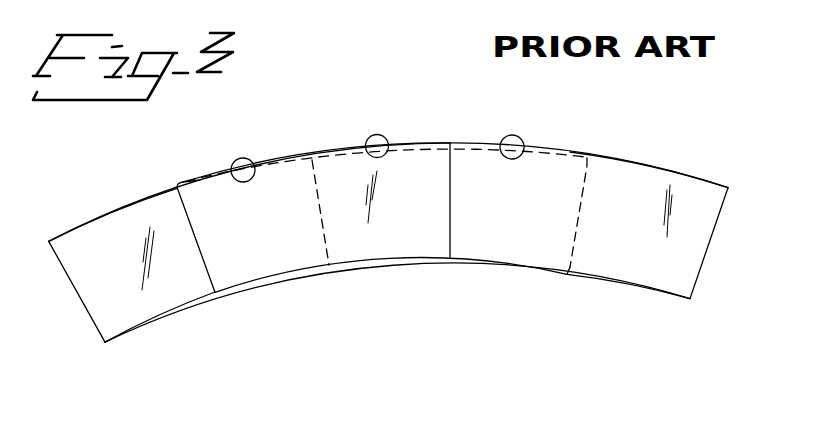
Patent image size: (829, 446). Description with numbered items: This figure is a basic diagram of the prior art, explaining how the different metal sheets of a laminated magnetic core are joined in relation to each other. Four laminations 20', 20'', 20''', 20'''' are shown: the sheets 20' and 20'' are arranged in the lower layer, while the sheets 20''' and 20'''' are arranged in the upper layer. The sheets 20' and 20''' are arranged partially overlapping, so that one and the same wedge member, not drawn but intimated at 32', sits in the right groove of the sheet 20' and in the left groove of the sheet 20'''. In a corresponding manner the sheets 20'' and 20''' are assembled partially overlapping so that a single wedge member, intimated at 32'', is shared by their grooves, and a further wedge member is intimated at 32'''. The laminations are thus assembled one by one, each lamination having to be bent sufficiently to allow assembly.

The lamination 20' is at (132, 273).
The lamination 20'' is at (386, 231).
The lamination 20''' is at (313, 231).
The lamination 20'''' is at (647, 250).
The wedge member 32' is at (236, 145).
The wedge member 32'' is at (378, 121).
The wedge member 32''' is at (522, 122).